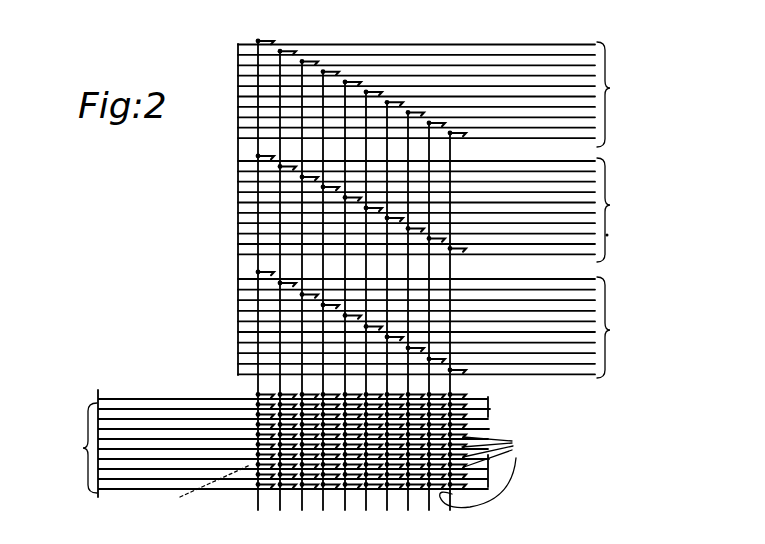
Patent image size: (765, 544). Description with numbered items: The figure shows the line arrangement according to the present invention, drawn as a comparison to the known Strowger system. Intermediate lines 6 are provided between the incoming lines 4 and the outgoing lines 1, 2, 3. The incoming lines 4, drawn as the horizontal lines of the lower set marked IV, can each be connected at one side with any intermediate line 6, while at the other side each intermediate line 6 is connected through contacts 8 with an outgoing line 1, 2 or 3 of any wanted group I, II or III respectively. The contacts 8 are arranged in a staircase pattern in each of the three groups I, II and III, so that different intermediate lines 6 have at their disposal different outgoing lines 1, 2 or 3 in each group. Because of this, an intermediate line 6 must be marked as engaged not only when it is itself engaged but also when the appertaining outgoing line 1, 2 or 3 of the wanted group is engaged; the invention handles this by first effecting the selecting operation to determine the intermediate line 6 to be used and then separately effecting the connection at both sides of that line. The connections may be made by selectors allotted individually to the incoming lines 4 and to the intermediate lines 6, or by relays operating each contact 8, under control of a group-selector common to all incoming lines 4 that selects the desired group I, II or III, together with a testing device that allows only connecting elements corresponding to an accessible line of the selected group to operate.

The outgoing line 1 is at (588, 300).
The outgoing line 2 is at (588, 182).
The outgoing line 3 is at (588, 67).
The incoming line 4 is at (173, 490).
The intermediate line 6 is at (258, 387).
The contacts 8 is at (366, 82).
The group I is at (611, 327).
The group II is at (612, 210).
The group III is at (615, 94).
The group IV is at (80, 461).